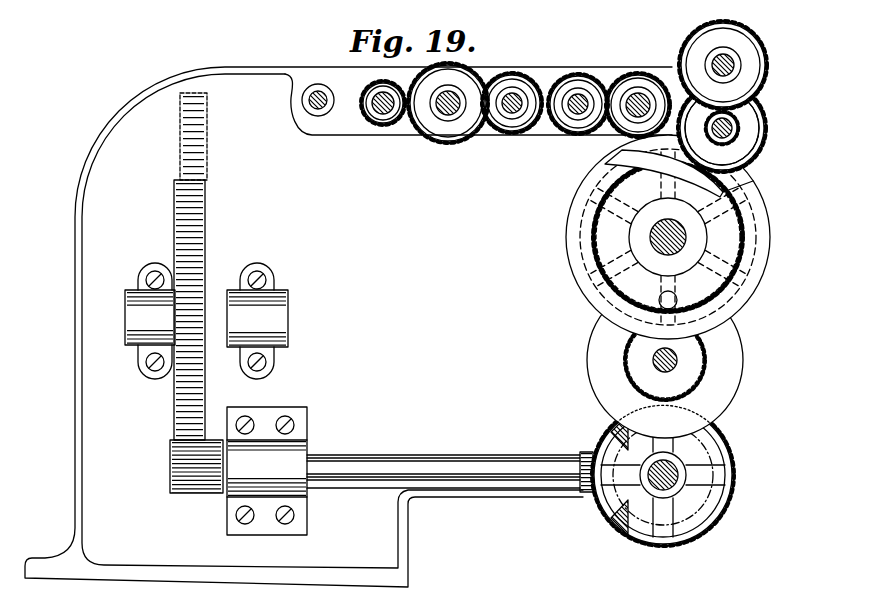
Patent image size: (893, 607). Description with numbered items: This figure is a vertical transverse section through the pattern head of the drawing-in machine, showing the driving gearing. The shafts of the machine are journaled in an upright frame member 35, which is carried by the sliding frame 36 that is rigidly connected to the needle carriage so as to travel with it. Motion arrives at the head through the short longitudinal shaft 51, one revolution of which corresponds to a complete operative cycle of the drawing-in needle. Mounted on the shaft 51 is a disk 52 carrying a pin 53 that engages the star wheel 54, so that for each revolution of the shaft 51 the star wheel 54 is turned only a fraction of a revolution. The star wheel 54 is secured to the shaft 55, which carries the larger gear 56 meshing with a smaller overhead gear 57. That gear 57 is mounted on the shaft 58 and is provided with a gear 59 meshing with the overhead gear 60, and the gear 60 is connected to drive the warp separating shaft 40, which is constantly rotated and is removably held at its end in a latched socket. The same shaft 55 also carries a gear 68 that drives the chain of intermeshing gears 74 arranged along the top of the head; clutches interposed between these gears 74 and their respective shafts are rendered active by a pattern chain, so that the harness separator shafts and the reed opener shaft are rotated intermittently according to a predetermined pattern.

The upright frame member 35 is at (447, 330).
The sliding frame 36 is at (336, 575).
The warp separating shaft 40 is at (730, 62).
The short longitudinal shaft 51 is at (653, 364).
The disk 52 is at (598, 352).
The pin 53 is at (738, 322).
The star wheel 54 is at (592, 312).
The shaft 55 is at (655, 238).
The larger gear 56 is at (732, 187).
The smaller overhead gear 57 is at (736, 128).
The shaft 58 is at (704, 112).
The gear 59 is at (745, 117).
The overhead gear 60 is at (680, 52).
The gear 68 is at (640, 172).
The intermeshing gears 74 is at (590, 70).